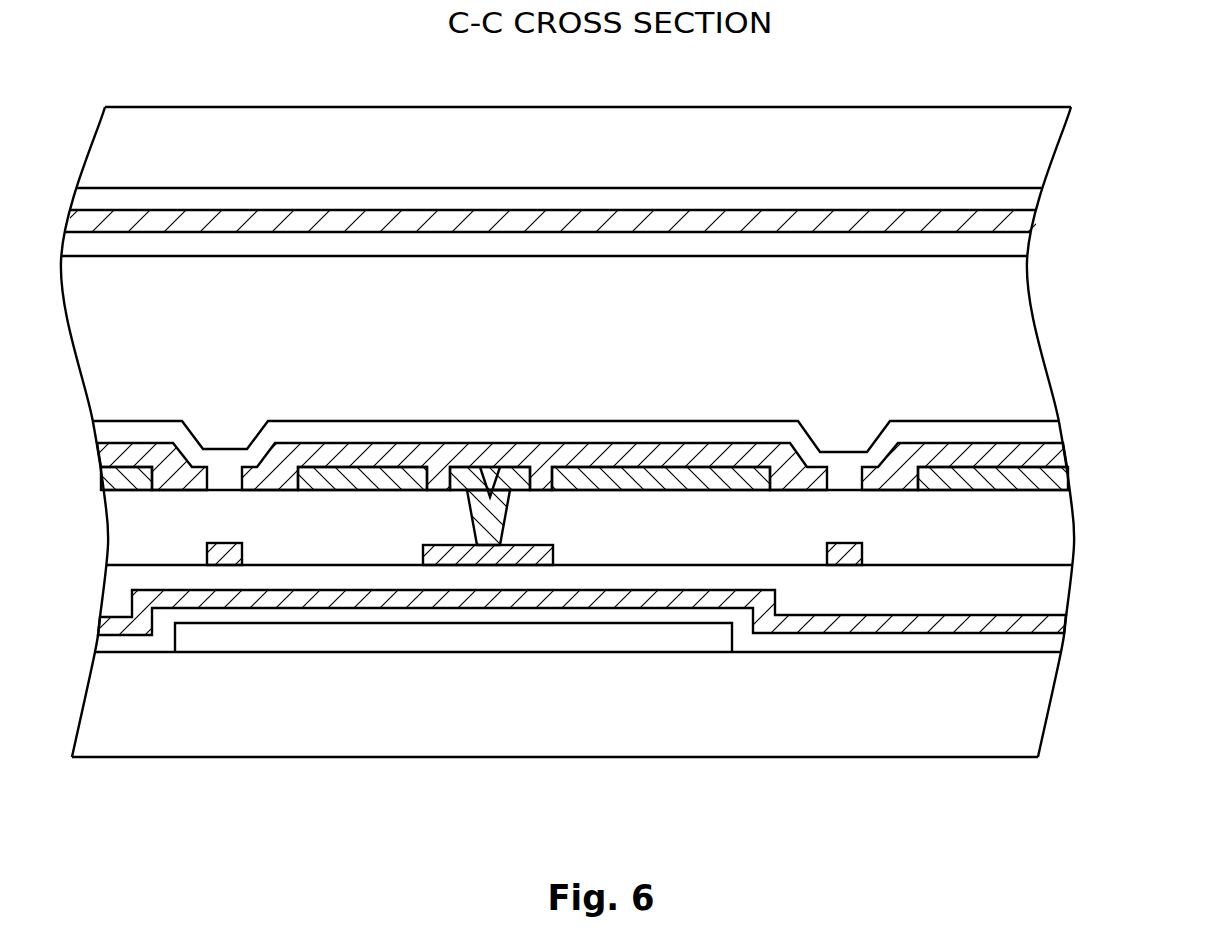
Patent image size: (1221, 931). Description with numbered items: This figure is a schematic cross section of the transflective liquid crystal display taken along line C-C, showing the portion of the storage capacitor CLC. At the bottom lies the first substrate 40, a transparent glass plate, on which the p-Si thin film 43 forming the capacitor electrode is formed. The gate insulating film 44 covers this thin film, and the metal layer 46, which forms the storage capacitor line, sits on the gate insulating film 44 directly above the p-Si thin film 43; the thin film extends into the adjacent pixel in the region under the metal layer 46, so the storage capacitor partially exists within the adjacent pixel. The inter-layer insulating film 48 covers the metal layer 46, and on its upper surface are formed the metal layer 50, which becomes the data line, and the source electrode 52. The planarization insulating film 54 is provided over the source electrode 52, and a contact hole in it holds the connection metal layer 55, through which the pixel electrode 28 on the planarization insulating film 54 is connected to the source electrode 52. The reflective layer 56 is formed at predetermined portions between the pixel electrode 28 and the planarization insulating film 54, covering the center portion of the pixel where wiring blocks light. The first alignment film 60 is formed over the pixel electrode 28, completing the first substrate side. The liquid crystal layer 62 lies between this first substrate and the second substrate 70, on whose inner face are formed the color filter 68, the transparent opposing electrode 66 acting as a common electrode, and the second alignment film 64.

The second substrate 70 is at (1037, 148).
The color filter 68 is at (1030, 200).
The opposing electrode 66 is at (1027, 220).
The second alignment film 64 is at (1022, 243).
The liquid crystal layer 62 is at (1020, 347).
The first alignment film 60 is at (1050, 433).
The pixel electrode 28 is at (1058, 457).
The reflective layer 56 is at (1060, 480).
The connection metal layer 55 is at (483, 522).
The planarization insulating film 54 is at (1057, 528).
The source electrode 52 is at (543, 552).
The metal layer 50 is at (215, 543).
The inter-layer insulating film 48 is at (1052, 593).
The metal layer 46 is at (1063, 628).
The gate insulating film 44 is at (1050, 640).
The p-Si thin film 43 is at (600, 637).
The first substrate 40 is at (1030, 695).
The storage capacitor CLC is at (350, 663).